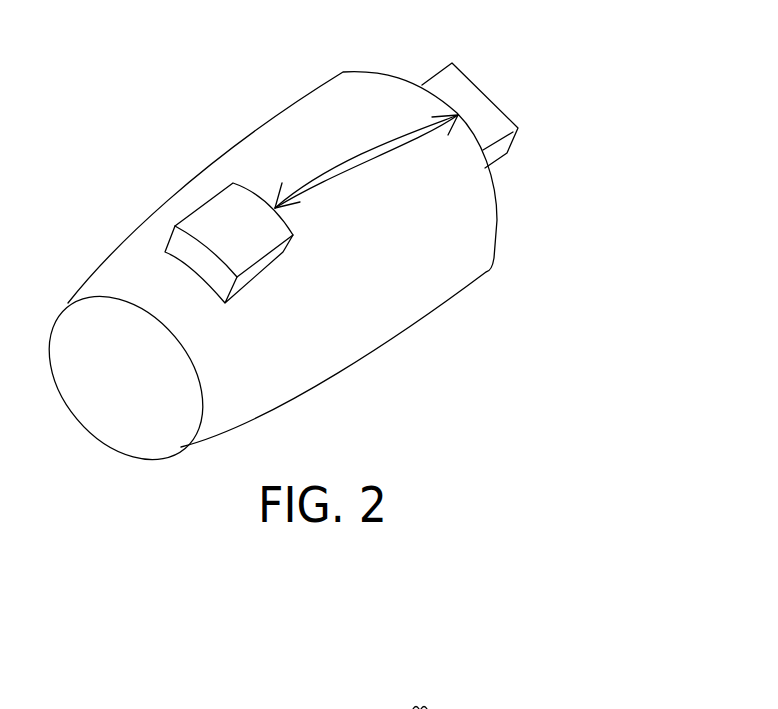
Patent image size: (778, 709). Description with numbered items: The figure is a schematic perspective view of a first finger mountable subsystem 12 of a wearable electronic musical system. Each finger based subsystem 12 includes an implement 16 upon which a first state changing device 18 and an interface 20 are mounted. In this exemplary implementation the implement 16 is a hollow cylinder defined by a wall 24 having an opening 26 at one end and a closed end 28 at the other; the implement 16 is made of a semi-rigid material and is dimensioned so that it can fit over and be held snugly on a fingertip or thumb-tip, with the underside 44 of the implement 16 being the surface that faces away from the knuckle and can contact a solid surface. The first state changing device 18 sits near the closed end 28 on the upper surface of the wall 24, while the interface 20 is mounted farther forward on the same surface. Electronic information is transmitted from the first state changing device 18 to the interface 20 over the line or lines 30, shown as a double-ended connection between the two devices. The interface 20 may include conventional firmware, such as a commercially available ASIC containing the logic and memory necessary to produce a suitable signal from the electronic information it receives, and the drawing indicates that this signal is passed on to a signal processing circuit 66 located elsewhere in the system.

The finger based subsystem 12 is at (535, 262).
The implement 16 is at (287, 110).
The first state changing device (SCD1) 18 is at (497, 90).
The interface 20 is at (237, 197).
The wall 24 is at (318, 367).
The opening 26 is at (136, 394).
The closed end 28 is at (382, 72).
The line 30 is at (370, 167).
The underside 44 is at (407, 335).
The signal processing circuit 66 is at (202, 203).